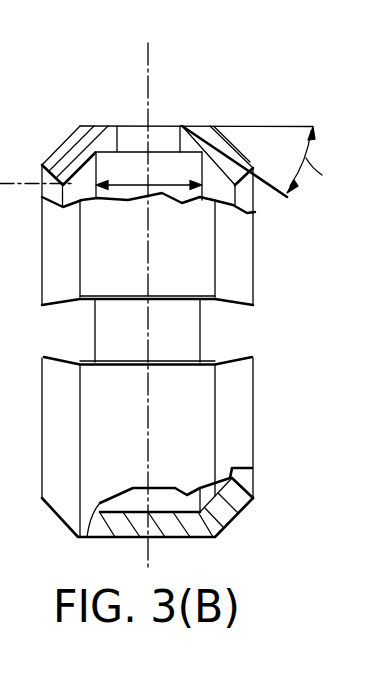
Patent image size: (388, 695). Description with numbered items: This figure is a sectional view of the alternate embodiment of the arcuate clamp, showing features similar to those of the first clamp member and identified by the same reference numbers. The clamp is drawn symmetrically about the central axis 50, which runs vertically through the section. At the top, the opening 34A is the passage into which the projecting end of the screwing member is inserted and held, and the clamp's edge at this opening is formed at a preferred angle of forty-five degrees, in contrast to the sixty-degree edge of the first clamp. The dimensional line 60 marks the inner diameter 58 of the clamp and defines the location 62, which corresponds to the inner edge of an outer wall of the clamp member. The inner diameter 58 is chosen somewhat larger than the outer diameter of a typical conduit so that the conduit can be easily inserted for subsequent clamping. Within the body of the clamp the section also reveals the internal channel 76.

The axis 50 is at (150, 55).
The opening 34A is at (160, 126).
The dimensional line 60 is at (0, 155).
The location 62 is at (72, 183).
The internal channel 76 is at (128, 199).
The inner diameter 58 is at (126, 434).